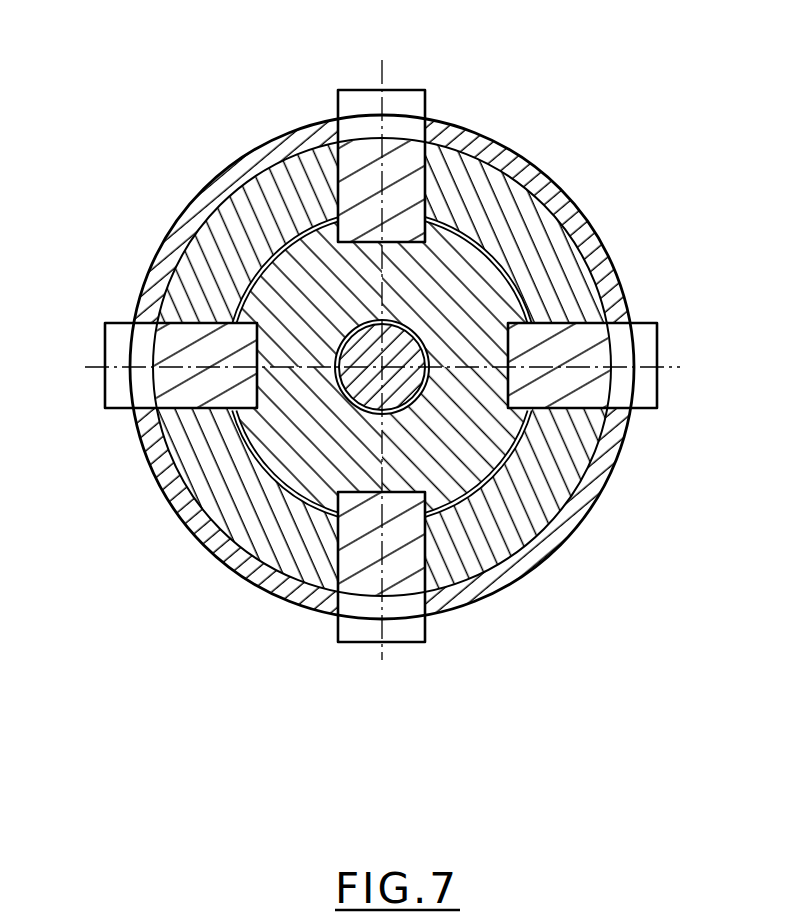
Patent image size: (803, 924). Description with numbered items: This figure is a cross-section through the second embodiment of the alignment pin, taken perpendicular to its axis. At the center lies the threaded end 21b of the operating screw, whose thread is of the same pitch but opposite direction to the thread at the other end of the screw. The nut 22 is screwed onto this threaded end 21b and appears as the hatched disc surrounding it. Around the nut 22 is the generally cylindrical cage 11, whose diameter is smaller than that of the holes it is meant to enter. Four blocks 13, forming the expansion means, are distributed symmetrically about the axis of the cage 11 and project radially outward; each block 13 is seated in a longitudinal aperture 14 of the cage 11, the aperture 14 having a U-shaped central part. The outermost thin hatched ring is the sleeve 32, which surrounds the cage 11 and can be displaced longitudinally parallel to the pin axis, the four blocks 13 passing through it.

The cage 11 is at (141, 143).
The block 13 is at (347, 339).
The longitudinal aperture 14 is at (623, 473).
The threaded end 21b is at (245, 427).
The nut 22 is at (346, 416).
The sleeve 32 is at (390, 367).